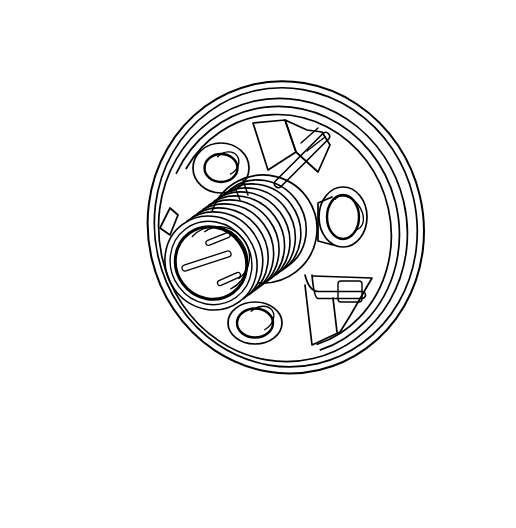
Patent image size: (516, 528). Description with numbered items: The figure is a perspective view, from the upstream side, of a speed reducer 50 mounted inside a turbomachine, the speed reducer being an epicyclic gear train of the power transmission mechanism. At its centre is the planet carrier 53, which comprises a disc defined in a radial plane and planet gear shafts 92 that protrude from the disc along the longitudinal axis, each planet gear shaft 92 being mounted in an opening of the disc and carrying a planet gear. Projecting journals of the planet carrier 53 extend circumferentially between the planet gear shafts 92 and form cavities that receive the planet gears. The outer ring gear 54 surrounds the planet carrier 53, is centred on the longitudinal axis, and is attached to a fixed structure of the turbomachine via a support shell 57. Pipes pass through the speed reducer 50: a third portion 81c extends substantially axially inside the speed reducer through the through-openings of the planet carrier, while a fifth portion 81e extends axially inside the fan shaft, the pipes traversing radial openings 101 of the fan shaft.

The speed reducer 50 is at (457, 167).
The planet carrier 53 is at (281, 352).
The outer ring gear 54 is at (372, 118).
The support shell 57 is at (387, 135).
The third portion of the pipe 81c is at (298, 120).
The fifth portion of the pipe 81e is at (198, 272).
The planet gear shaft 92 is at (367, 251).
The radial opening 101 is at (252, 170).